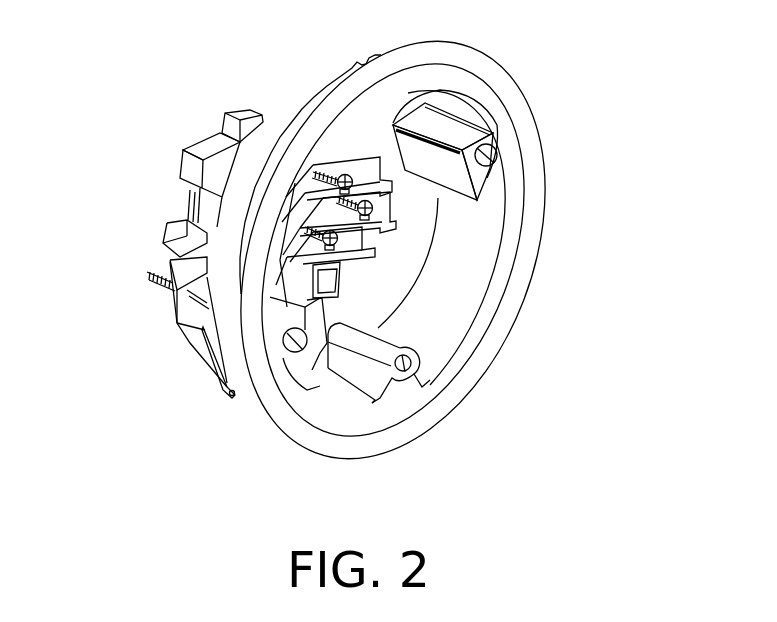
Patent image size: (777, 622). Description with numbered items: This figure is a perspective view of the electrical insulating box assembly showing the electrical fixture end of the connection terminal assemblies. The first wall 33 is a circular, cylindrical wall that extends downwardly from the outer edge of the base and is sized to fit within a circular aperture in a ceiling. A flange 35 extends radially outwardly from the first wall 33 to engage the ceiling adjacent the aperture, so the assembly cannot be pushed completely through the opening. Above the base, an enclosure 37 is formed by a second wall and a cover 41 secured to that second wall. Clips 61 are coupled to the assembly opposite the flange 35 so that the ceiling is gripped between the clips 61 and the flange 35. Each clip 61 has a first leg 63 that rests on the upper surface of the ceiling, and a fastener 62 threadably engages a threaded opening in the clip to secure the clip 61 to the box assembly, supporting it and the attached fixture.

The first wall 33 is at (243, 378).
The flange 35 is at (484, 60).
The enclosure 37 is at (190, 127).
The cover 41 is at (168, 226).
The clip 61 is at (180, 373).
The fastener 62 is at (152, 278).
The first leg 63 is at (212, 380).